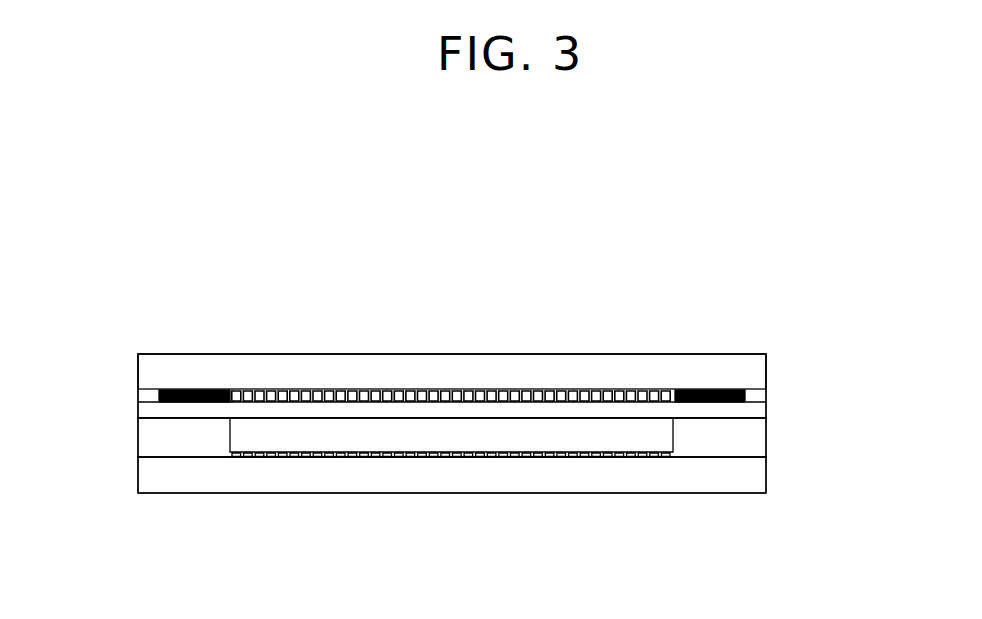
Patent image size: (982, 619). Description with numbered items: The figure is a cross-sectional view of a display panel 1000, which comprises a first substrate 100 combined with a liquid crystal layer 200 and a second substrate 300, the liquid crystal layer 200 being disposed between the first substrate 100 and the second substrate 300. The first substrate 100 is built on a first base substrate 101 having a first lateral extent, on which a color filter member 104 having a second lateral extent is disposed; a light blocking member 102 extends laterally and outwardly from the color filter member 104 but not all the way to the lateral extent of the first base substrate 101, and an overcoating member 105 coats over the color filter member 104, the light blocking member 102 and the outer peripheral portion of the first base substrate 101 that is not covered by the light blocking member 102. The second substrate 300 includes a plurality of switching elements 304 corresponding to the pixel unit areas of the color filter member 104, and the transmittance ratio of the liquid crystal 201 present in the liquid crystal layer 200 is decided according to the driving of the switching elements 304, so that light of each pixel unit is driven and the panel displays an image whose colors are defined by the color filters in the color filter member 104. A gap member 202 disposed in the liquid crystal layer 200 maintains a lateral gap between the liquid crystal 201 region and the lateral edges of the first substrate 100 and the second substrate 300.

The display panel 1000 is at (555, 291).
The first substrate 100 is at (851, 336).
The first base substrate 101 is at (763, 372).
The light blocking member 102 is at (763, 393).
The color filter member 104 is at (673, 385).
The overcoating member 105 is at (763, 407).
The liquid crystal layer 200 is at (851, 416).
The liquid crystal 201 is at (673, 430).
The gap member 202 is at (138, 440).
The second substrate 300 is at (763, 477).
The switching elements 304 is at (673, 461).